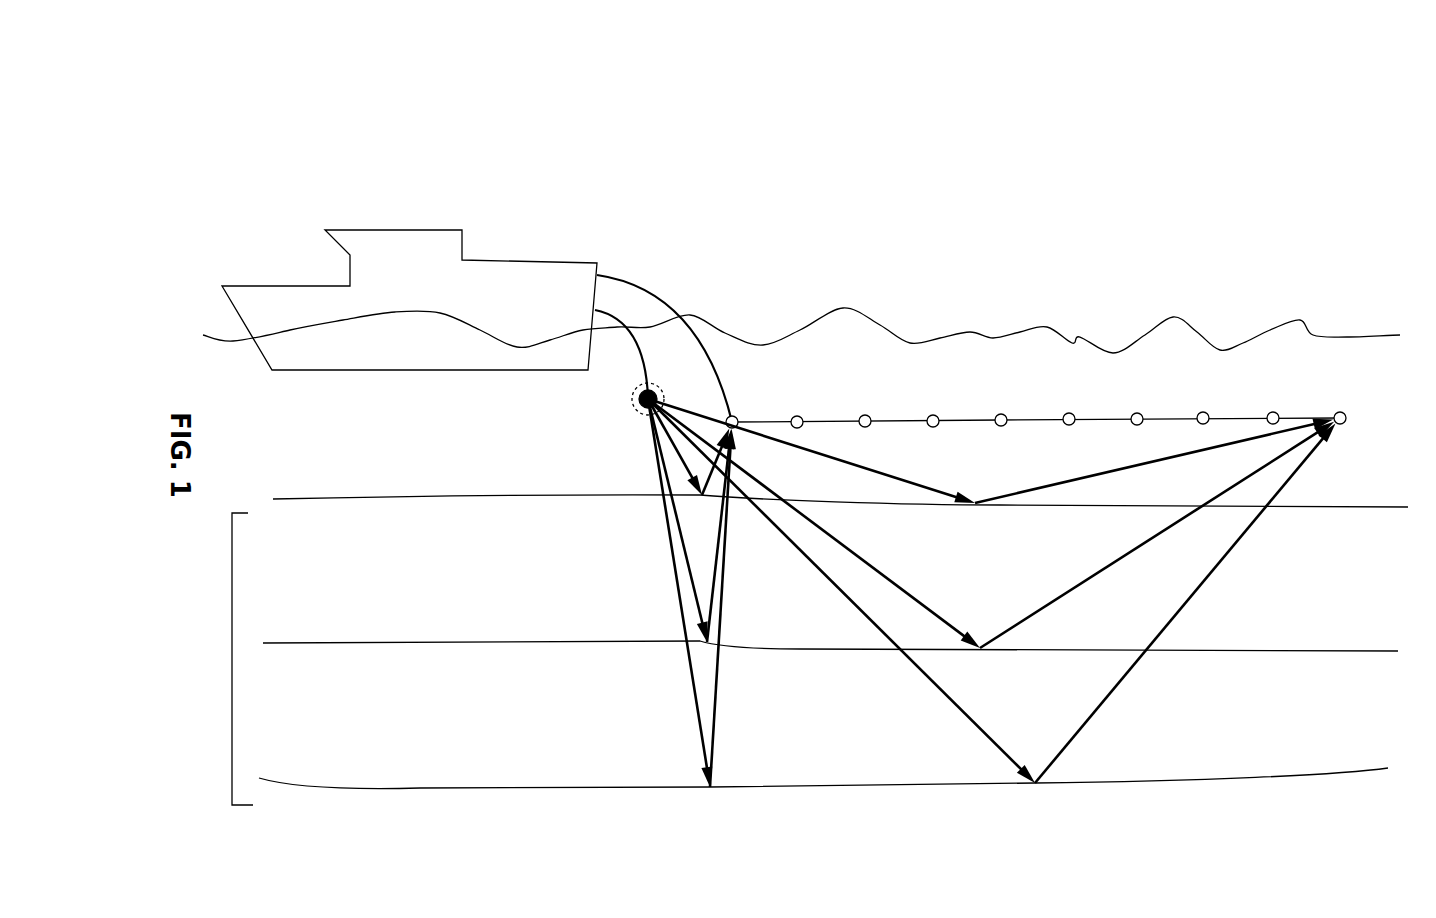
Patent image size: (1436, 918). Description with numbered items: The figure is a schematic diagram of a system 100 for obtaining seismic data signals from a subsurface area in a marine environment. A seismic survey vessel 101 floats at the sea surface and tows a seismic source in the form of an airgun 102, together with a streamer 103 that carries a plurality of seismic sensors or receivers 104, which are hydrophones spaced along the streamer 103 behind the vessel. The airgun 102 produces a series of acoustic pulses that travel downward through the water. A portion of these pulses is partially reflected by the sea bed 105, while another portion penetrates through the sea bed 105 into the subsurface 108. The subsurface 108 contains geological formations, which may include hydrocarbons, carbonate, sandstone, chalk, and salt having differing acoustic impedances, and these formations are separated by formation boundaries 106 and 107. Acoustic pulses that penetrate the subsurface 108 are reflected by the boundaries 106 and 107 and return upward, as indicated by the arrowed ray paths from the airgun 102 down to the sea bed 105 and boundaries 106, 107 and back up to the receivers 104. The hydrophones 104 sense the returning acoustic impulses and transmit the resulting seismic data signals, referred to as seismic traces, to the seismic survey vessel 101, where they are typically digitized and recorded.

The system 100 is at (333, 155).
The seismic survey vessel 101 is at (493, 261).
The airgun 102 is at (634, 412).
The streamer 103 is at (833, 422).
The seismic sensors/receivers 104 is at (1130, 415).
The sea bed 105 is at (405, 499).
The formation boundary 106 is at (405, 643).
The formation boundary 107 is at (407, 788).
The subsurface 108 is at (223, 659).